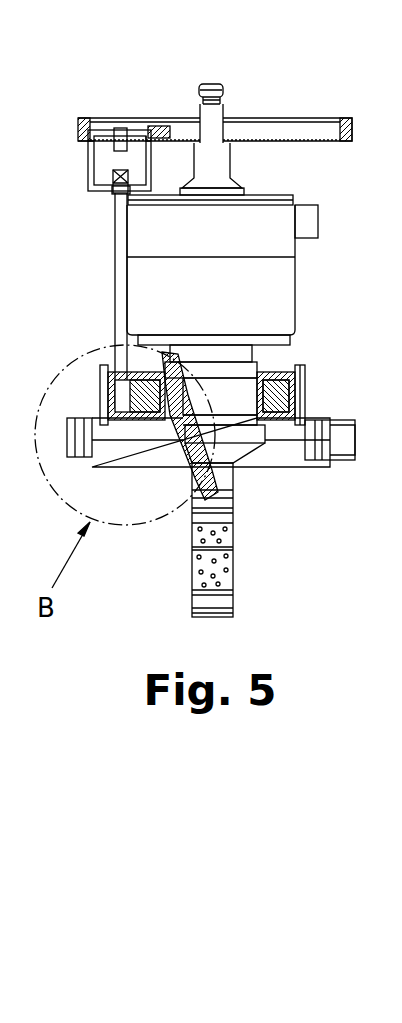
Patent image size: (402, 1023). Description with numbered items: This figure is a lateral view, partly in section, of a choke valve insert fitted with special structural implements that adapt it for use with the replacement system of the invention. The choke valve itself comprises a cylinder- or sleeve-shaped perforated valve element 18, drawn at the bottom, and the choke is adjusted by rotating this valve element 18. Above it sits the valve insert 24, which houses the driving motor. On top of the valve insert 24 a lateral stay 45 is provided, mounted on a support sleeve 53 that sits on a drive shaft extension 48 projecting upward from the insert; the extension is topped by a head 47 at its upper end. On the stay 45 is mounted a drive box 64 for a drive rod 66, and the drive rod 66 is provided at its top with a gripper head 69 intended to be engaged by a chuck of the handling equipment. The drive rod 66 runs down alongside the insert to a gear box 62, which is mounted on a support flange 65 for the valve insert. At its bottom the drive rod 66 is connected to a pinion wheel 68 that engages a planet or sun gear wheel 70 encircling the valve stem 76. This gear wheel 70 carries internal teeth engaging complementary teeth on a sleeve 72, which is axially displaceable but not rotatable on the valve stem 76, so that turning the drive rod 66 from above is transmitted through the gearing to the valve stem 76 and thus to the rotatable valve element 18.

The perforated valve element 18 is at (225, 568).
The valve insert 24 is at (300, 275).
The lateral stay 45 is at (170, 118).
The head 47 is at (207, 84).
The drive shaft extension 48 is at (215, 116).
The support sleeve 53 is at (228, 162).
The gear box 62 is at (308, 400).
The drive box 64 is at (88, 178).
The support flange 65 is at (278, 377).
The drive rod 66 is at (115, 267).
The pinion wheel 68 is at (145, 352).
The gripper head 69 is at (116, 176).
The planet or sun gear wheel 70 is at (306, 380).
The sleeve 72 is at (160, 435).
The valve stem 76 is at (245, 473).